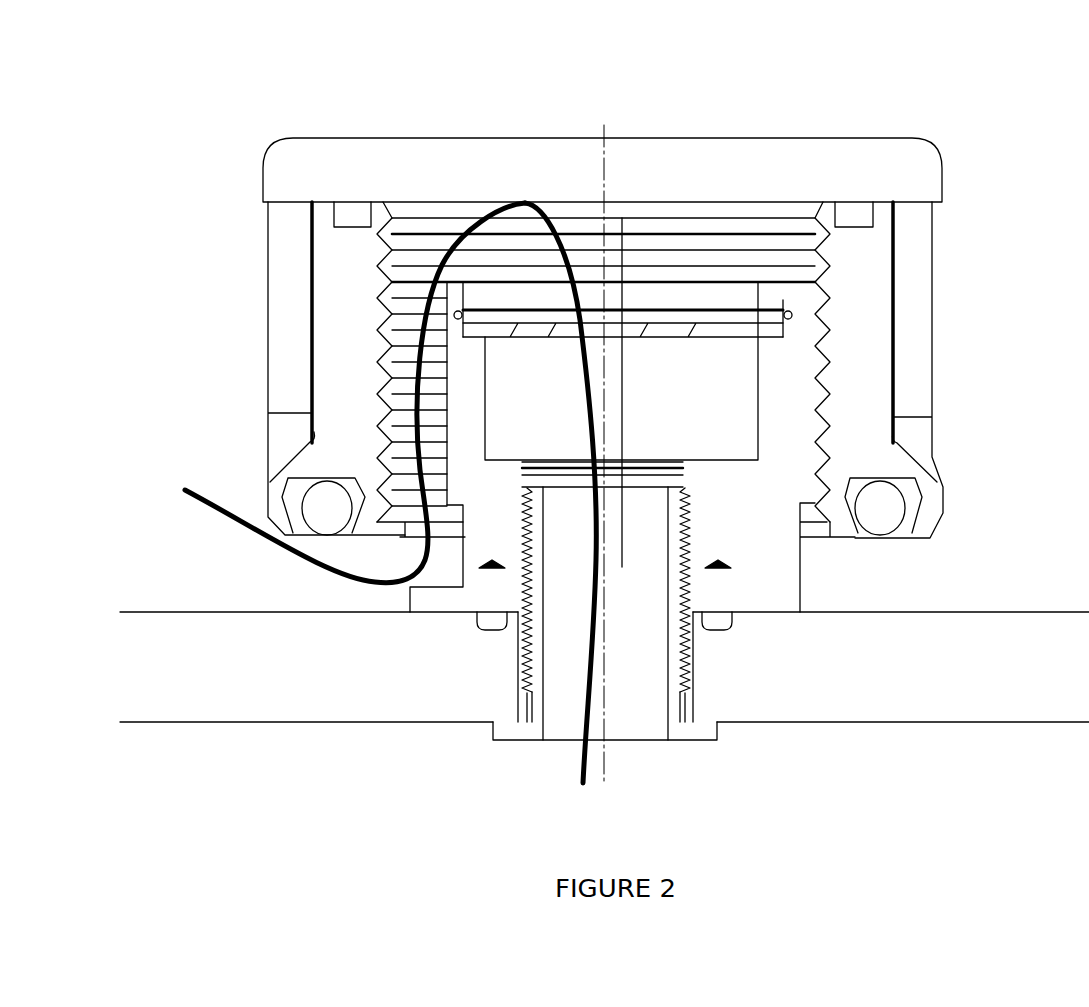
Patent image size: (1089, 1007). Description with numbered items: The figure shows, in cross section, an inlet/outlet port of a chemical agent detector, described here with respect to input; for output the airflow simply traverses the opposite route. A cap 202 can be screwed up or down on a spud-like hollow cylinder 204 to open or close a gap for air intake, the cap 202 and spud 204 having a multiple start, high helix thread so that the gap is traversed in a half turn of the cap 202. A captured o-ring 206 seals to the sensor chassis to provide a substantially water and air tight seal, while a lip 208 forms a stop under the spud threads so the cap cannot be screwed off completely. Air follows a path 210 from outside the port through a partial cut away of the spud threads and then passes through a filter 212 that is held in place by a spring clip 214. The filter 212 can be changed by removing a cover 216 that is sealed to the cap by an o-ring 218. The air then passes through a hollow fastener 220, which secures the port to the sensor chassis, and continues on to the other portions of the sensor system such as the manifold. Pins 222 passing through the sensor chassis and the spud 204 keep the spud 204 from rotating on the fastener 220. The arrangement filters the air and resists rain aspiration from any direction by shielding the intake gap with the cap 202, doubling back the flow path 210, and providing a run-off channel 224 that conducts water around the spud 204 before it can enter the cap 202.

The cap 202 is at (258, 322).
The spud-like hollow cylinder 204 is at (780, 417).
The captured o-ring 206 is at (887, 505).
The lip 208 is at (843, 550).
The airflow path 210 is at (190, 515).
The filter 212 is at (657, 325).
The spring clip 214 is at (722, 320).
The cover 216 is at (503, 163).
The o-ring 218 is at (352, 218).
The hollow fastener 220 is at (637, 672).
The pins 222 is at (713, 630).
The run-off channel 224 is at (440, 560).